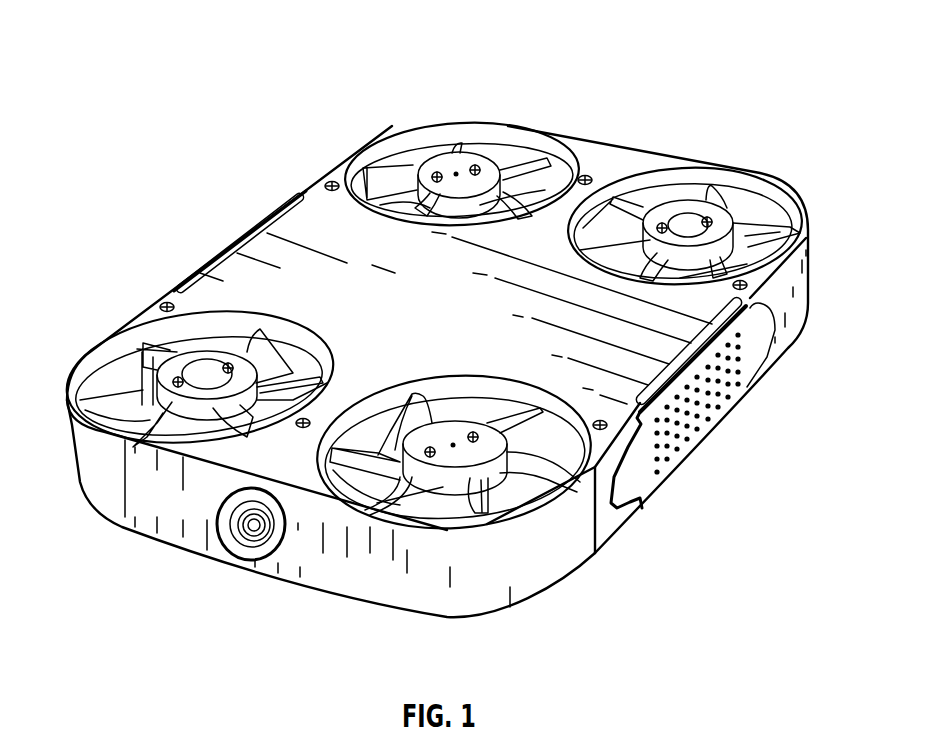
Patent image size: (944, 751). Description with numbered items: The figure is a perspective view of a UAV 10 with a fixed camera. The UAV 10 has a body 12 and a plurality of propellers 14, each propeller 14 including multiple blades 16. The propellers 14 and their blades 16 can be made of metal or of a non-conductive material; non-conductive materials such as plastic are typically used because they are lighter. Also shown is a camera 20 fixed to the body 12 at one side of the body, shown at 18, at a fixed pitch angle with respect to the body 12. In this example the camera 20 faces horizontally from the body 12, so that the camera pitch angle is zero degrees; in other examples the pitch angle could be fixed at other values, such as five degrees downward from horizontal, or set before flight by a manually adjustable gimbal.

The UAV 10 is at (712, 115).
The body 12 is at (242, 242).
The propellers 14 is at (722, 258).
The blades 16 is at (468, 515).
The side of the body 18 is at (117, 478).
The camera 20 is at (243, 537).